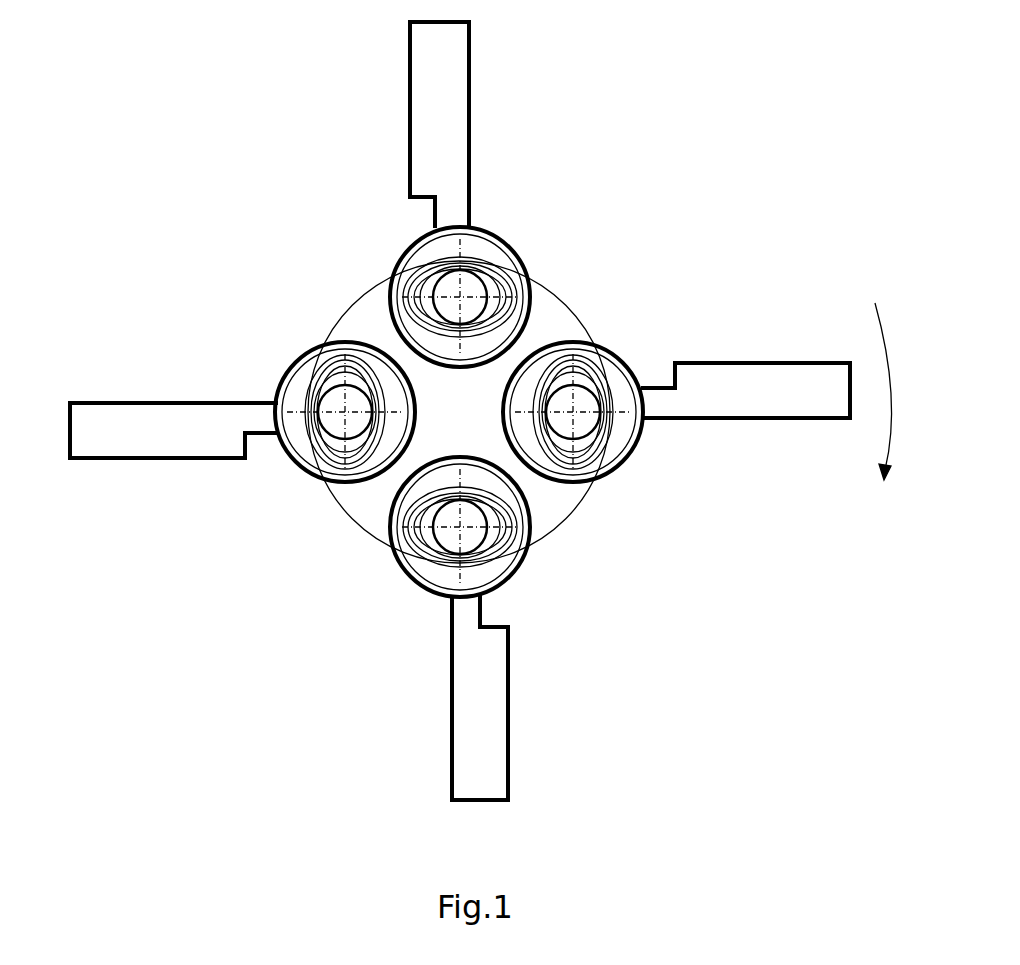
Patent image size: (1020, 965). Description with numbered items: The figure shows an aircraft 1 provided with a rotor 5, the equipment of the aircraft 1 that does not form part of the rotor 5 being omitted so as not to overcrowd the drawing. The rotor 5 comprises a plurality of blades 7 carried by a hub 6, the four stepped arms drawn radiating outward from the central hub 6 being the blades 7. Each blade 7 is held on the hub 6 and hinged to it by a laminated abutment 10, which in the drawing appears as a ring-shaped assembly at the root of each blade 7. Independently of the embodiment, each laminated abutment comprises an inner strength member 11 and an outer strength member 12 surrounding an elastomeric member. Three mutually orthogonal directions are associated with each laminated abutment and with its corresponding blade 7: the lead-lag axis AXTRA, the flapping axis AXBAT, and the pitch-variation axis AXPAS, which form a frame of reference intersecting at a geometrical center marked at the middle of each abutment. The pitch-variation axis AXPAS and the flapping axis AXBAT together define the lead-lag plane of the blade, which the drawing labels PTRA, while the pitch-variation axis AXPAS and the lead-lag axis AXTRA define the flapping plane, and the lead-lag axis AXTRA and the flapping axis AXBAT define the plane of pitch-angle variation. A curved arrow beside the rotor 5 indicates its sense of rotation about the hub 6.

The aircraft 1 is at (178, 745).
The rotor 5 is at (728, 670).
The hub 6 is at (556, 326).
The blade 7 is at (469, 72).
The rotor unit 10 is at (372, 283).
The inner strength member 11 is at (563, 398).
The outer strength member 12 is at (645, 428).
The transverse plane PTRA is at (212, 150).
The lead-lag axis AXTRA is at (345, 412).
The pitch-variation axis AXPAS is at (487, 248).
The flapping axis AXBAT is at (560, 228).